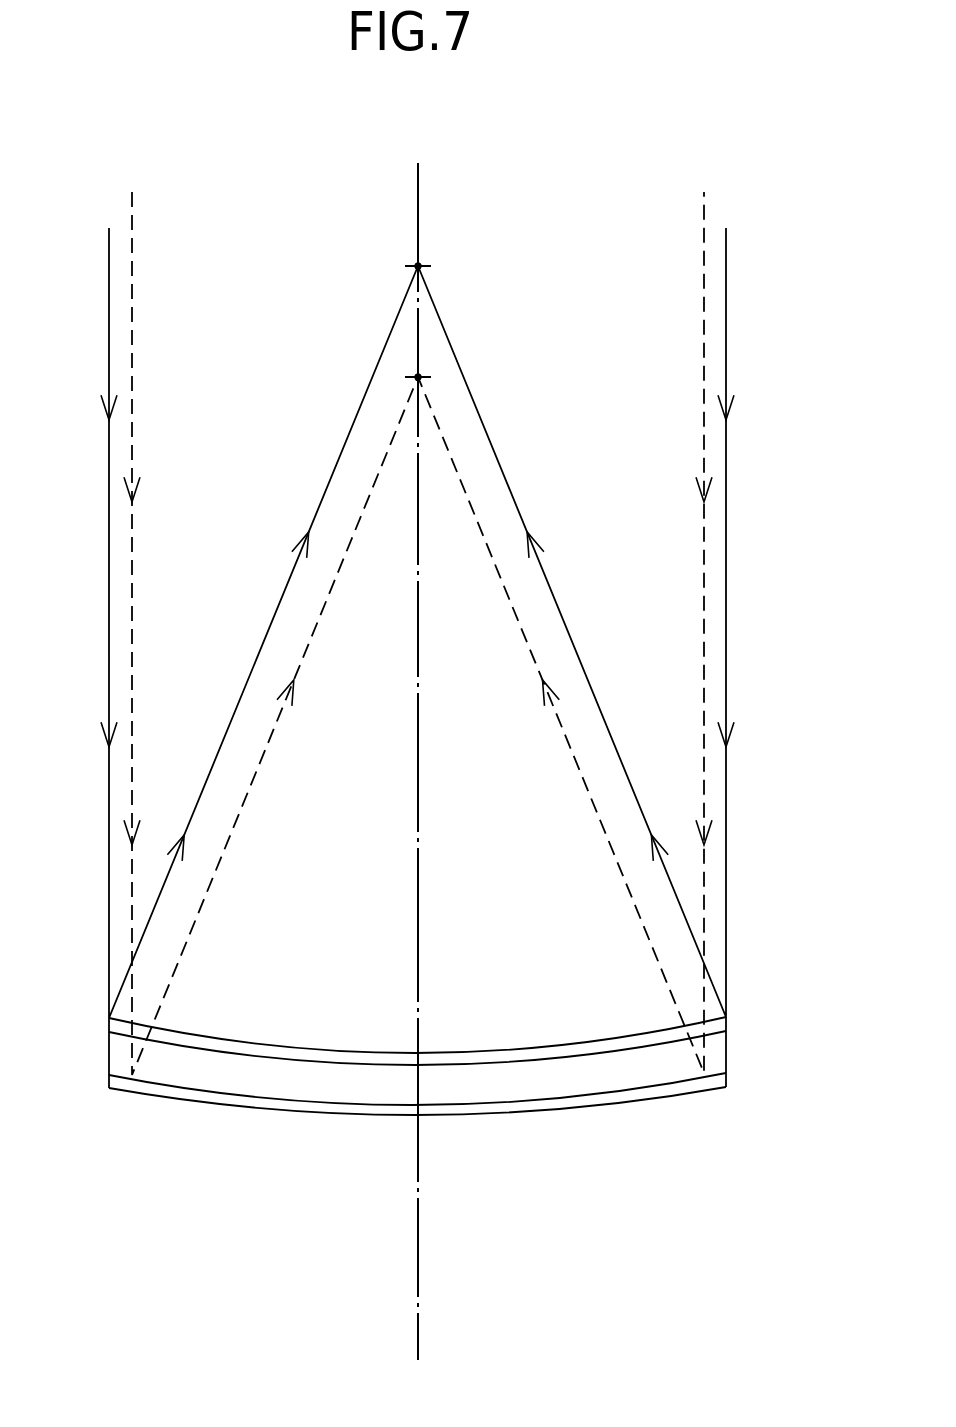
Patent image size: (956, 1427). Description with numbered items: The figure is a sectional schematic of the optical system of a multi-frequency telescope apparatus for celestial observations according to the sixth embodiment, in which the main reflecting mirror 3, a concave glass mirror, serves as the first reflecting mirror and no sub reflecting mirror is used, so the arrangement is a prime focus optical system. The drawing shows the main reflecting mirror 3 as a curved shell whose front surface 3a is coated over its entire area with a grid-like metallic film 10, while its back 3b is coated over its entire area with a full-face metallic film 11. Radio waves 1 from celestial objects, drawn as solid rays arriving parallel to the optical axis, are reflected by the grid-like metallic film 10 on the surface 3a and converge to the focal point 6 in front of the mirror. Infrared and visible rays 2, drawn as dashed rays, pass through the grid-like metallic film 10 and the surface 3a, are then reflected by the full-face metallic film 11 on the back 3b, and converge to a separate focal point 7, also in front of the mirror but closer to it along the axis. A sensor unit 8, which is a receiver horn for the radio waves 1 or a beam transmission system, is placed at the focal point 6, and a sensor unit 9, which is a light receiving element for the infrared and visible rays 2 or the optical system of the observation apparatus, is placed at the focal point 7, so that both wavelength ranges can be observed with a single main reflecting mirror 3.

The radio waves 1 is at (726, 282).
The infrared and visible rays 2 is at (704, 200).
The main reflecting mirror 3 is at (457, 1089).
The surface 3a is at (615, 1052).
The back 3b is at (615, 1094).
The focal point of the radio waves 6 is at (420, 264).
The focal point of the infrared and visible rays 7 is at (420, 375).
The sensor unit 8 is at (487, 254).
The sensor unit 9 is at (487, 364).
The grid-like metallic film 10 is at (548, 1046).
The full-face metallic film 11 is at (543, 1112).